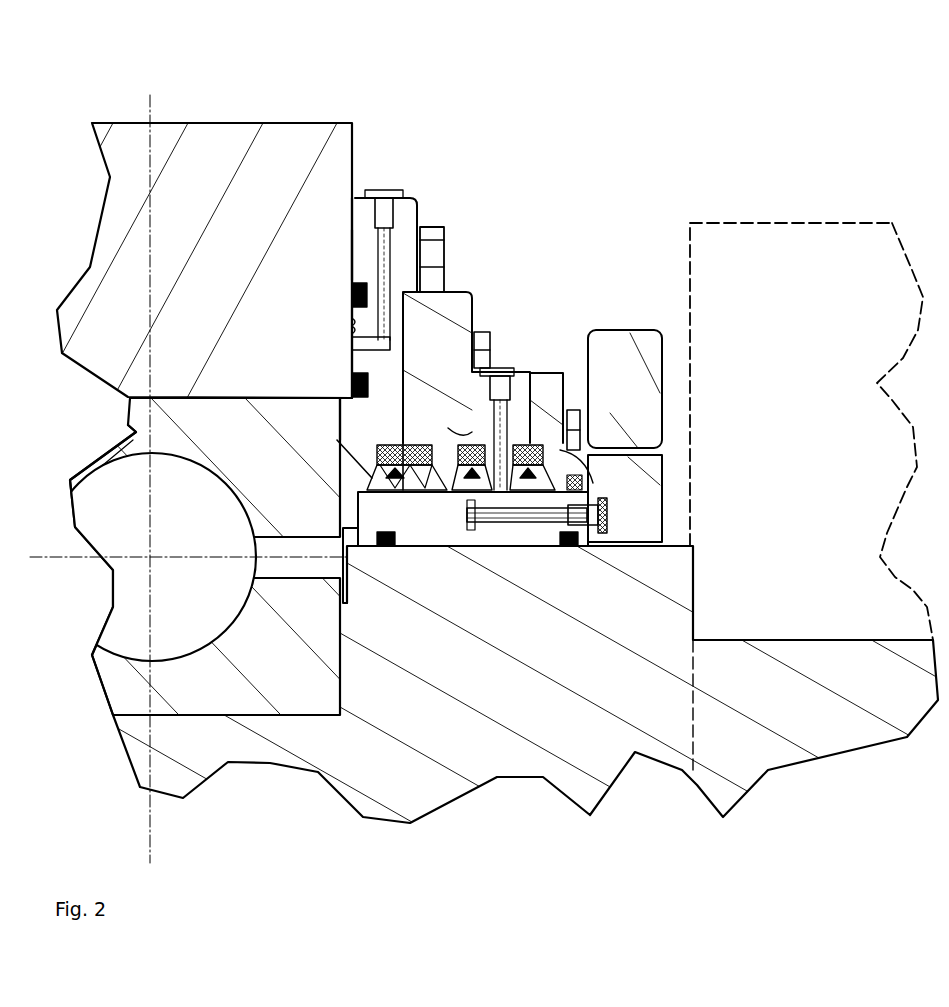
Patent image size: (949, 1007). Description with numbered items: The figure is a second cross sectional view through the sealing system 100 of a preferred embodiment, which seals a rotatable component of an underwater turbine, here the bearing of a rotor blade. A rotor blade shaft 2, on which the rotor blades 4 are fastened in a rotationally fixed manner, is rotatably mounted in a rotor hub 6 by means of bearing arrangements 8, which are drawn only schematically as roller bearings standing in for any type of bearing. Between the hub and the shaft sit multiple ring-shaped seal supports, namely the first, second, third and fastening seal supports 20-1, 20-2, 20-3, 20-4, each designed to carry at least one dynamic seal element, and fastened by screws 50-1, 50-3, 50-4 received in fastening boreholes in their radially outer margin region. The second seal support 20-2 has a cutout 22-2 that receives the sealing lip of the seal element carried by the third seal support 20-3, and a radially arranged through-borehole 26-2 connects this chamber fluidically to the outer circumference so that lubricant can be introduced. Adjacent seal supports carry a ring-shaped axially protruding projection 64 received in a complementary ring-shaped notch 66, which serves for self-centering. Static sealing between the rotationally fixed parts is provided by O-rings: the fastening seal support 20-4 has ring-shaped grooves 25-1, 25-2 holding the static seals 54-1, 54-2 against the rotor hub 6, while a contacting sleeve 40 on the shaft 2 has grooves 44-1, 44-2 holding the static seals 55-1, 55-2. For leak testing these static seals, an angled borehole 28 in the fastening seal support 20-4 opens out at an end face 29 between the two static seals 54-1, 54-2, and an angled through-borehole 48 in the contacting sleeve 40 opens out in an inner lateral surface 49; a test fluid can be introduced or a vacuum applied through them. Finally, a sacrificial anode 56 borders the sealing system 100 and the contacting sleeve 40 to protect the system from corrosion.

The sealing system 100 is at (447, 58).
The rotor blade shaft 2 is at (518, 748).
The rotor blade 4 is at (850, 253).
The rotor hub 6 is at (208, 140).
The bearing arrangement 8 is at (125, 435).
The borehole 28 is at (350, 248).
The end face 29 is at (350, 325).
The first seal support 20-1 is at (570, 410).
The second seal support 20-2 is at (535, 395).
The third seal support 20-3 is at (455, 290).
The fastening seal support 20-4 is at (403, 195).
The screw 50-1 is at (578, 410).
The screw 50-3 is at (483, 332).
The screw 50-4 is at (432, 228).
The ring-shaped groove 25-1 is at (362, 280).
The ring-shaped groove 25-2 is at (355, 395).
The static seal 54-1 is at (352, 298).
The static seal 54-2 is at (352, 382).
The static seal 55-1 is at (570, 547).
The static seal 55-2 is at (382, 547).
The groove 44-1 is at (543, 547).
The groove 44-2 is at (410, 547).
The cutout 22-2 is at (455, 547).
The contacting sleeve 40 is at (430, 547).
The through-borehole 48 is at (500, 547).
The inner lateral surface 49 is at (460, 547).
The through-borehole 26-2 is at (487, 547).
The sacrificial anode 56 is at (630, 340).
The projection 64 is at (468, 436).
The notch 66 is at (590, 462).